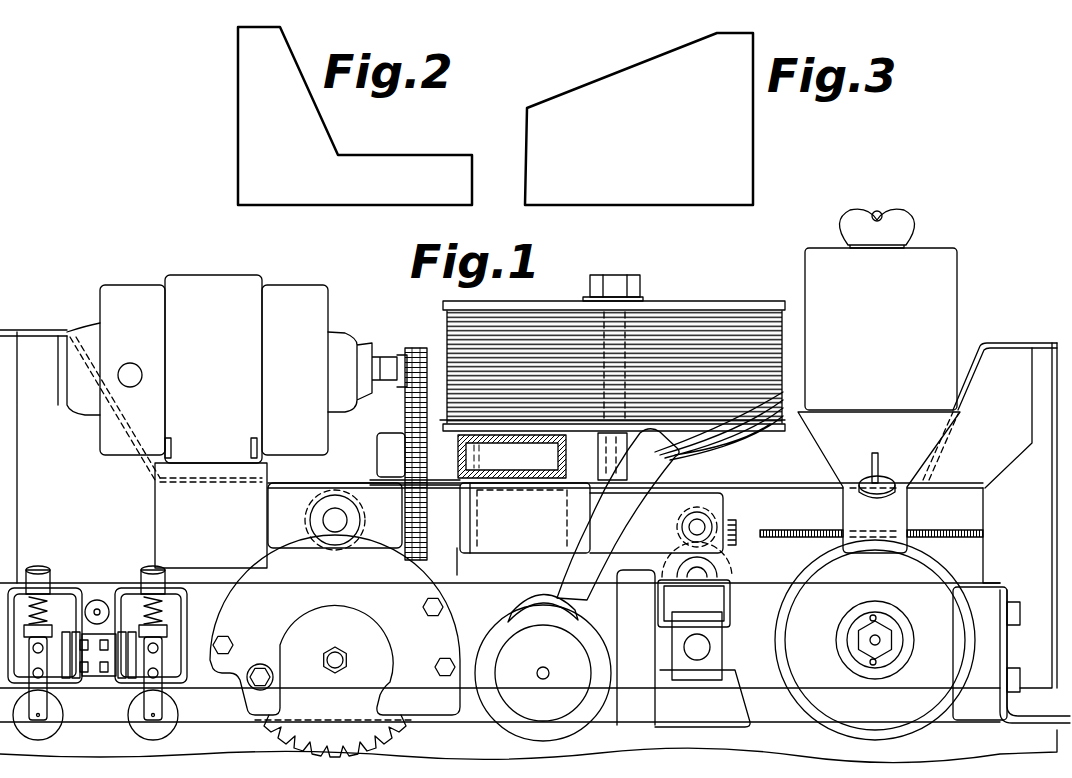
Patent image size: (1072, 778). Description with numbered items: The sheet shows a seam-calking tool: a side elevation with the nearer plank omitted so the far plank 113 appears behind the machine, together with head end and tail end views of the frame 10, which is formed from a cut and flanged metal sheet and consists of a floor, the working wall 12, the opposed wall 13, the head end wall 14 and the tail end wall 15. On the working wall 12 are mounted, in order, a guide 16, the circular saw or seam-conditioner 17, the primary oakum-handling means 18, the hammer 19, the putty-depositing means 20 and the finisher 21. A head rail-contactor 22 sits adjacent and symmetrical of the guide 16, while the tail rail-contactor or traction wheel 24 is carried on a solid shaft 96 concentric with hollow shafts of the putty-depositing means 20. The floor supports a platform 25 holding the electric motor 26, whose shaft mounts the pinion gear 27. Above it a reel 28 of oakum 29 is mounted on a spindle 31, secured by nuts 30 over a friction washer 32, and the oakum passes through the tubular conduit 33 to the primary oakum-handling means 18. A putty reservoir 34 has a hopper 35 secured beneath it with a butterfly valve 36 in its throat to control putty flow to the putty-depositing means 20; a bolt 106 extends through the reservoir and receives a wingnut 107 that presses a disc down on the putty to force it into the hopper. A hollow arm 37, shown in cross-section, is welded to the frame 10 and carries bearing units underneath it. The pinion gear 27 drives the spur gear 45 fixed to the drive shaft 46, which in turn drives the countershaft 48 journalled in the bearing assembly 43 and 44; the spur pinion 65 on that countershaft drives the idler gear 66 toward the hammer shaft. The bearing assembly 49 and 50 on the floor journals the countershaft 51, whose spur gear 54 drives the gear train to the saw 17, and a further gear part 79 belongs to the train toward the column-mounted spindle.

In FIG. 1, the frame 10 is at (37, 311).
In FIG. 1, the working wall 12 is at (20, 560).
In FIG. 1, the opposed wall 13 is at (412, 453).
In FIG. 2, the head end wall 14 is at (355, 116).
In FIG. 3, the tail end wall 15 is at (639, 119).
In FIG. 1, the tail end wall 15 is at (1040, 343).
In FIG. 1, the guide 16 is at (45, 582).
In FIG. 1, the circular saw 17 is at (335, 646).
In FIG. 1, the primary oakum-handling means 18 is at (575, 725).
In FIG. 1, the hammer 19 is at (702, 653).
In FIG. 1, the putty-depositing means 20 is at (891, 640).
In FIG. 1, the finisher 21 is at (1014, 722).
In FIG. 1, the head rail-contactor 22 is at (103, 602).
In FIG. 1, the tail rail-contactor 24 is at (850, 651).
In FIG. 1, the platform 25 is at (211, 515).
In FIG. 1, the electric motor 26 is at (253, 369).
In FIG. 1, the pinion gear 27 is at (415, 348).
In FIG. 1, the reel 28 is at (493, 304).
In FIG. 1, the oakum 29 is at (570, 296).
In FIG. 1, the nuts 30 is at (596, 277).
In FIG. 1, the spindle 31 is at (615, 273).
In FIG. 1, the friction washer 32 is at (650, 302).
In FIG. 1, the tubular conduit 33 is at (604, 541).
In FIG. 1, the putty reservoir 34 is at (881, 329).
In FIG. 1, the hopper 35 is at (879, 482).
In FIG. 1, the butterfly valve 36 is at (878, 461).
In FIG. 1, the hollow arm 37 is at (556, 462).
In FIG. 1, the bearing unit 43 is at (625, 493).
In FIG. 1, the complementary bearing unit 44 is at (686, 496).
In FIG. 1, the spur gear 45 is at (403, 426).
In FIG. 1, the drive shaft 46 is at (444, 562).
In FIG. 1, the countershaft 48 is at (705, 525).
In FIG. 1, the bearing unit 49 is at (384, 540).
In FIG. 1, the complementary bearing unit 50 is at (335, 516).
In FIG. 1, the countershaft 51 is at (338, 518).
In FIG. 1, the spur gear 54 is at (323, 520).
In FIG. 1, the spur pinion 65 is at (733, 546).
In FIG. 1, the idler gear 66 is at (720, 574).
In FIG. 1, the gear part 79 is at (948, 540).
In FIG. 1, the solid shaft 96 is at (892, 648).
In FIG. 1, the bolt 106 is at (883, 215).
In FIG. 1, the wingnut 107 is at (853, 226).
In FIG. 1, the plank 113 is at (231, 740).